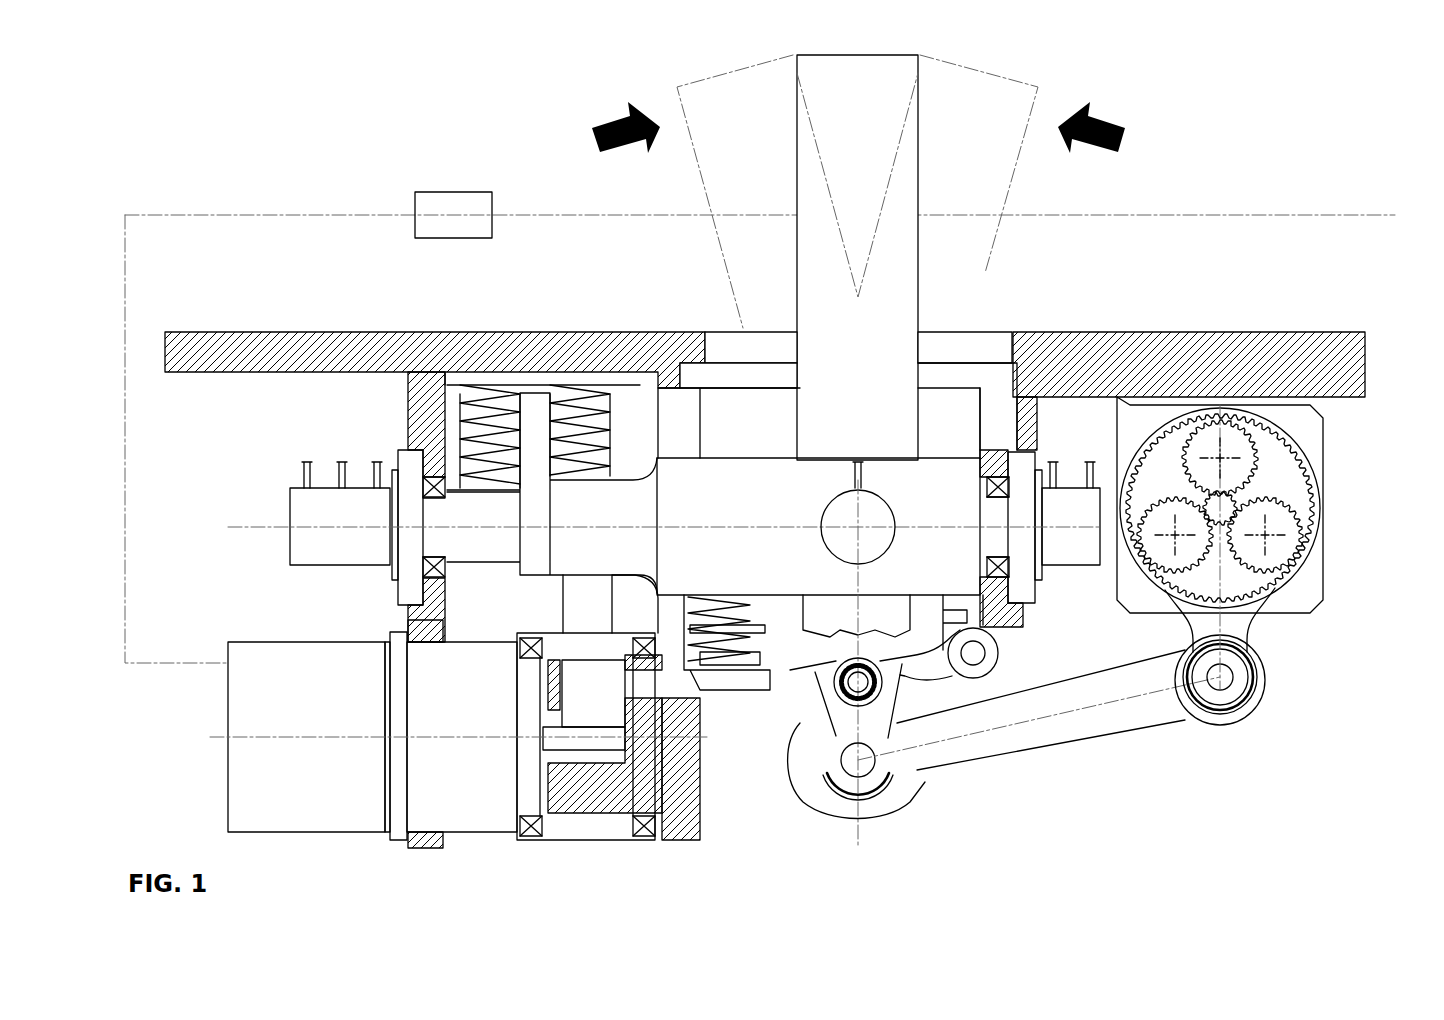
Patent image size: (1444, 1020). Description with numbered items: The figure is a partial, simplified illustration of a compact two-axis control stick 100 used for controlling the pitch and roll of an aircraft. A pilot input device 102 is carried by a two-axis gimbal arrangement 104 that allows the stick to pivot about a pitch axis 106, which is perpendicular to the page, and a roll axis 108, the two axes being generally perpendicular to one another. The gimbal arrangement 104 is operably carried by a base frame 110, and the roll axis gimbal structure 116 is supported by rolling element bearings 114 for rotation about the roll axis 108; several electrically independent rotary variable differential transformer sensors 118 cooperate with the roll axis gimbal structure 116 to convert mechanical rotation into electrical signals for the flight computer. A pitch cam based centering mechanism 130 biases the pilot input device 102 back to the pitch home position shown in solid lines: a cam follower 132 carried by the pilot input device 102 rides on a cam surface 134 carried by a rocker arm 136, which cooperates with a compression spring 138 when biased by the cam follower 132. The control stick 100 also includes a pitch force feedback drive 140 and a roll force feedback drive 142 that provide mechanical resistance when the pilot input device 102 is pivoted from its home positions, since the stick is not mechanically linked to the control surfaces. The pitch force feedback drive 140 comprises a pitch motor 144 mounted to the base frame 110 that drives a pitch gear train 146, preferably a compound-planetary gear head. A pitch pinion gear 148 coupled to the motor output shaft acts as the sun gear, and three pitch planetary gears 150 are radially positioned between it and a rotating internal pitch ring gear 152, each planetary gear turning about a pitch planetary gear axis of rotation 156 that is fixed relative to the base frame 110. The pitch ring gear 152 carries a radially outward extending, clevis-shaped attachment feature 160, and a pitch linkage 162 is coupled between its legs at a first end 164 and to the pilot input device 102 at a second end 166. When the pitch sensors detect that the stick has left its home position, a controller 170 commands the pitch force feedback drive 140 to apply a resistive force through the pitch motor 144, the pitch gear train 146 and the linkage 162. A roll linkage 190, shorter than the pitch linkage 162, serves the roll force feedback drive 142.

The compact two-axis control stick 100 is at (290, 140).
The pilot input device 102 is at (797, 130).
The two-axis gimbal arrangement 104 is at (1047, 648).
The pitch axis 106 is at (858, 520).
The roll axis 108 is at (237, 525).
The base frame 110 is at (328, 332).
The rolling element bearings 114 is at (990, 487).
The roll axis gimbal structure 116 is at (725, 480).
The rotary variable differential transformer sensors 118 is at (325, 498).
The pitch cam based centering mechanism 130 is at (778, 743).
The cam follower 132 is at (840, 693).
The cam surface 134 is at (935, 717).
The rocker arm 136 is at (780, 668).
The compression spring 138 is at (725, 645).
The pitch force feedback drive 140 is at (1330, 705).
The roll force feedback drive 142 is at (453, 850).
The pitch motor 144 is at (1300, 413).
The pitch gear train 146 is at (1350, 583).
The pitch pinion gear 148 is at (1223, 487).
The pitch planetary gears 150 is at (1228, 440).
The pitch ring gear 152 is at (1300, 560).
The pitch planetary gear axes of rotation 156 is at (1220, 487).
The attachment feature 160 is at (1230, 655).
The pitch linkage 162 is at (1037, 747).
The first end 164 is at (1228, 728).
The second end 166 is at (875, 808).
The controller 170 is at (429, 192).
The roll linkage 190 is at (587, 607).